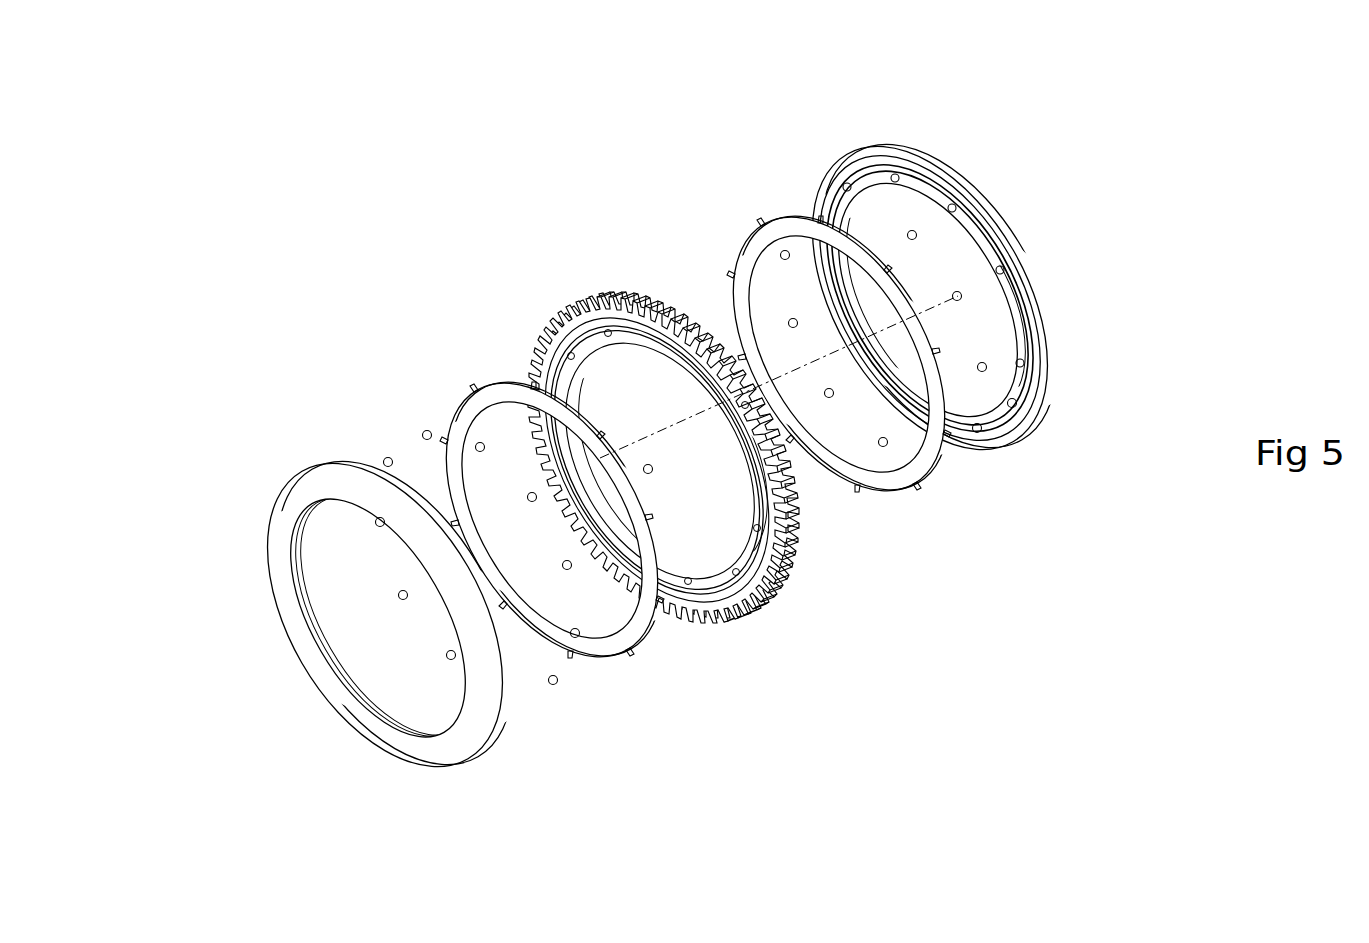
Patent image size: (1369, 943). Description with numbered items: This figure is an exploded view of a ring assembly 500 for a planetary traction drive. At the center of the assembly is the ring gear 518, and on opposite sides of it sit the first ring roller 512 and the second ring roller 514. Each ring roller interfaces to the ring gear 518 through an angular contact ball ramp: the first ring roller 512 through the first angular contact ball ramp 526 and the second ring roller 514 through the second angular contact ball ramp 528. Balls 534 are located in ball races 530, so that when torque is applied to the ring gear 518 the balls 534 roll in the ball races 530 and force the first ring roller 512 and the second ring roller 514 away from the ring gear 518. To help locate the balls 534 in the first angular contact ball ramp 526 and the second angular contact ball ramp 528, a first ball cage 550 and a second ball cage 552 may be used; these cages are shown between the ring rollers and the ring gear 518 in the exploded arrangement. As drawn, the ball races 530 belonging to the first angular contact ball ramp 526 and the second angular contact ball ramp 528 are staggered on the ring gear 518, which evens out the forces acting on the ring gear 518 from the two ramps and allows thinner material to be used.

The ring assembly 500 is at (277, 187).
The first ring roller 512 is at (303, 483).
The second ring roller 514 is at (946, 173).
The ring gear 518 is at (620, 292).
The first angular contact ball ramp 526 is at (583, 688).
The second angular contact ball ramp 528 is at (880, 515).
The ball races 530 is at (1000, 270).
The balls 534 is at (908, 232).
The first ball cage 550 is at (507, 720).
The second ball cage 552 is at (940, 452).